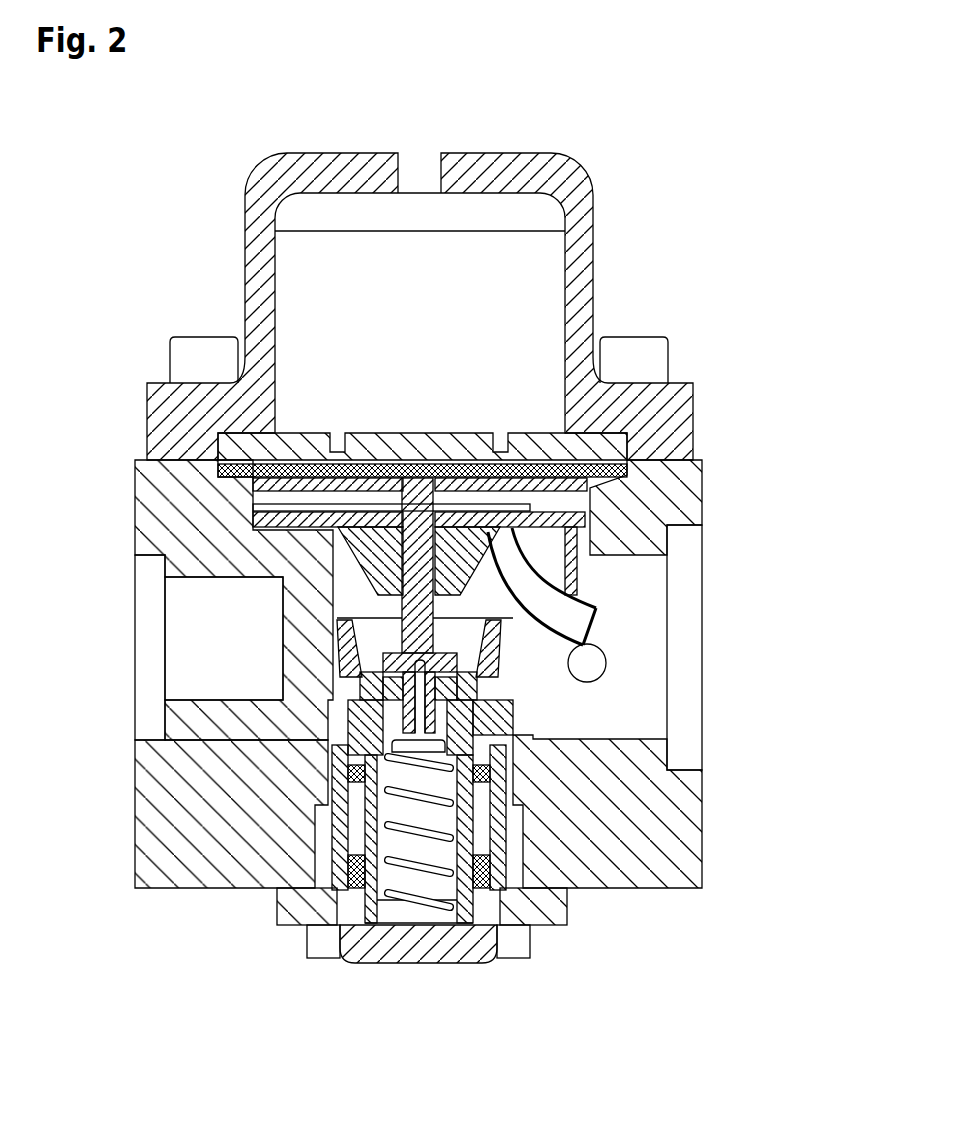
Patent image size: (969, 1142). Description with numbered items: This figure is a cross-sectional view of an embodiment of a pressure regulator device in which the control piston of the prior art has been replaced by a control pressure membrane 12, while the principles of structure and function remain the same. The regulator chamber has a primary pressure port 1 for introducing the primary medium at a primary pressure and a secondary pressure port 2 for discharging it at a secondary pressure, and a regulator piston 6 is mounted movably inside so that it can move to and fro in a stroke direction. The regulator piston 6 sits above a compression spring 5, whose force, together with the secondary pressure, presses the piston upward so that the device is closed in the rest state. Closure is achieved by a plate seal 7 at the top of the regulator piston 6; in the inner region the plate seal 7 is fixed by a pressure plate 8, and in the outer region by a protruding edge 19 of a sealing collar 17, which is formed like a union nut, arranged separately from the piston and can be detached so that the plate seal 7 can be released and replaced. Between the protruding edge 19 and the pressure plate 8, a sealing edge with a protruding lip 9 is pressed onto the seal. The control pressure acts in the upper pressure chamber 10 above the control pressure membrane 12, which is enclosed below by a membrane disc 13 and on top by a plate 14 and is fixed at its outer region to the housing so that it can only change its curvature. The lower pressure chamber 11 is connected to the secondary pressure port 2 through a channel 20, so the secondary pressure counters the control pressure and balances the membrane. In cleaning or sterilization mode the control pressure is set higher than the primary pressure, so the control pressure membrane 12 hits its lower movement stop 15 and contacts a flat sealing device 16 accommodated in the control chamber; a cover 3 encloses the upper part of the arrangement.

The primary pressure port 1 is at (204, 648).
The secondary pressure port 2 is at (639, 616).
The cover 3 is at (258, 254).
The compression spring 5 is at (332, 842).
The regulator piston 6 is at (350, 705).
The plate seal 7 is at (340, 690).
The pressure plate 8 is at (604, 662).
The protruding lip 9 is at (326, 646).
The upper pressure chamber 10 is at (517, 316).
The lower pressure chamber 11 is at (557, 500).
The control pressure membrane 12 is at (216, 468).
The membrane disc 13 is at (584, 458).
The plate 14 is at (225, 447).
The lower movement stop 15 is at (370, 538).
The sealing device 16 is at (300, 508).
The sealing collar 17 is at (490, 732).
The protruding edge 19 is at (480, 700).
The channel 20 is at (525, 594).